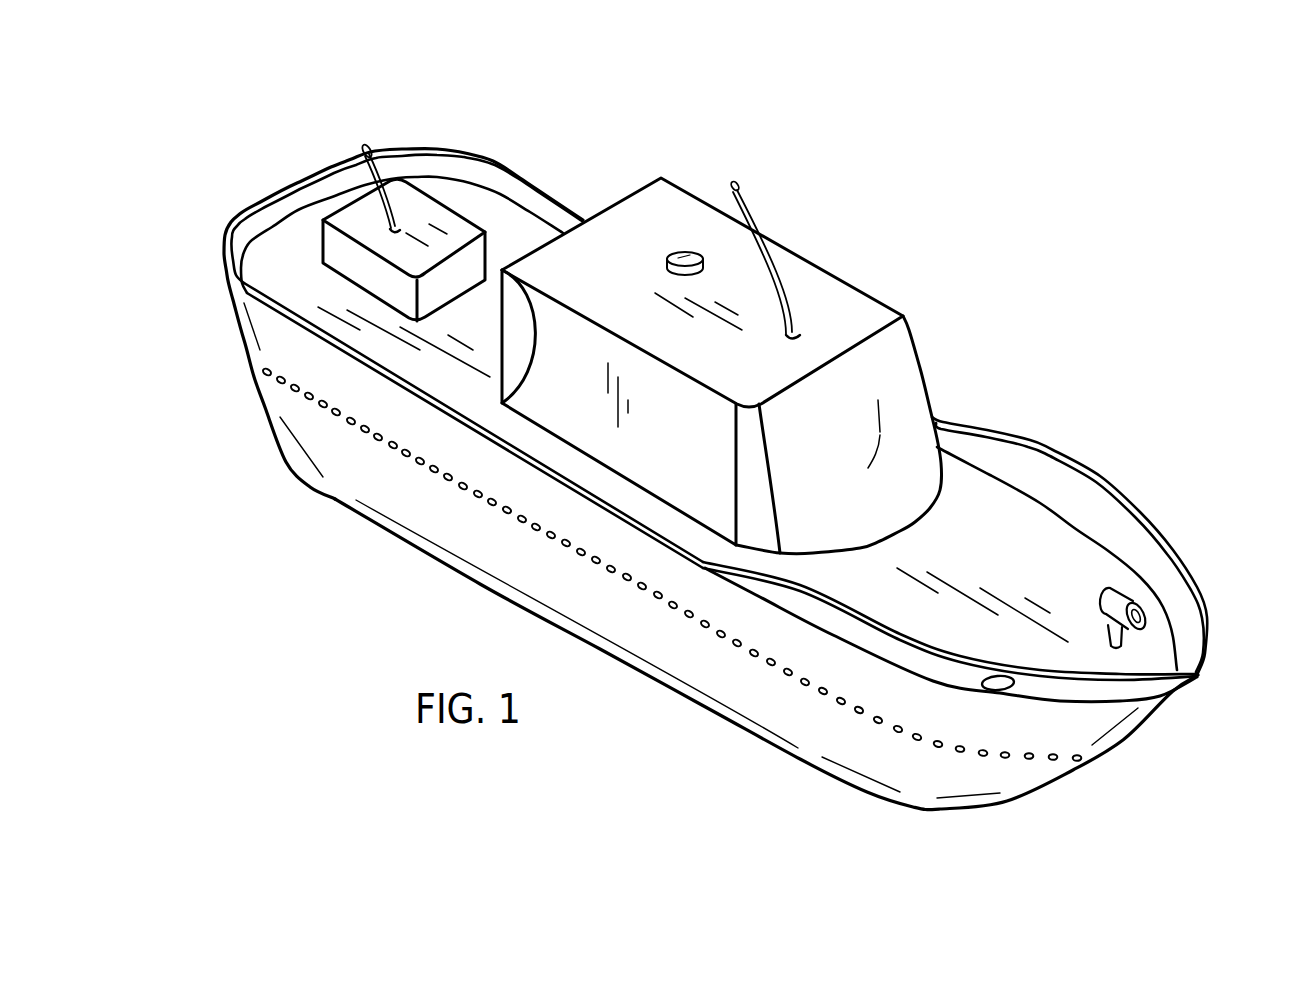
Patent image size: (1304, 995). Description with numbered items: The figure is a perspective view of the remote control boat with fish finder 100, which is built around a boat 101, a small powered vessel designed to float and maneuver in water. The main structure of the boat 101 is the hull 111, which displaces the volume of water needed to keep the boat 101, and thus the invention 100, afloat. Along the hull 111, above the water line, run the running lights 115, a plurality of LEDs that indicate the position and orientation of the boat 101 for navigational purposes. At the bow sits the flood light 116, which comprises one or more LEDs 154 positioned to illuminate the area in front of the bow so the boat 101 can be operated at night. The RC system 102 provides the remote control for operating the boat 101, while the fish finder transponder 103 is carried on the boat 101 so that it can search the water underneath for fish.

The remote control boat with fish finder 100 is at (242, 142).
The boat 101 is at (484, 160).
The RC system 102 is at (782, 252).
The fish finder transponder 103 is at (390, 178).
The hull 111 is at (1113, 715).
The running lights 115 is at (1038, 760).
The flood light 116 is at (1121, 598).
The LEDs 154 is at (1138, 614).